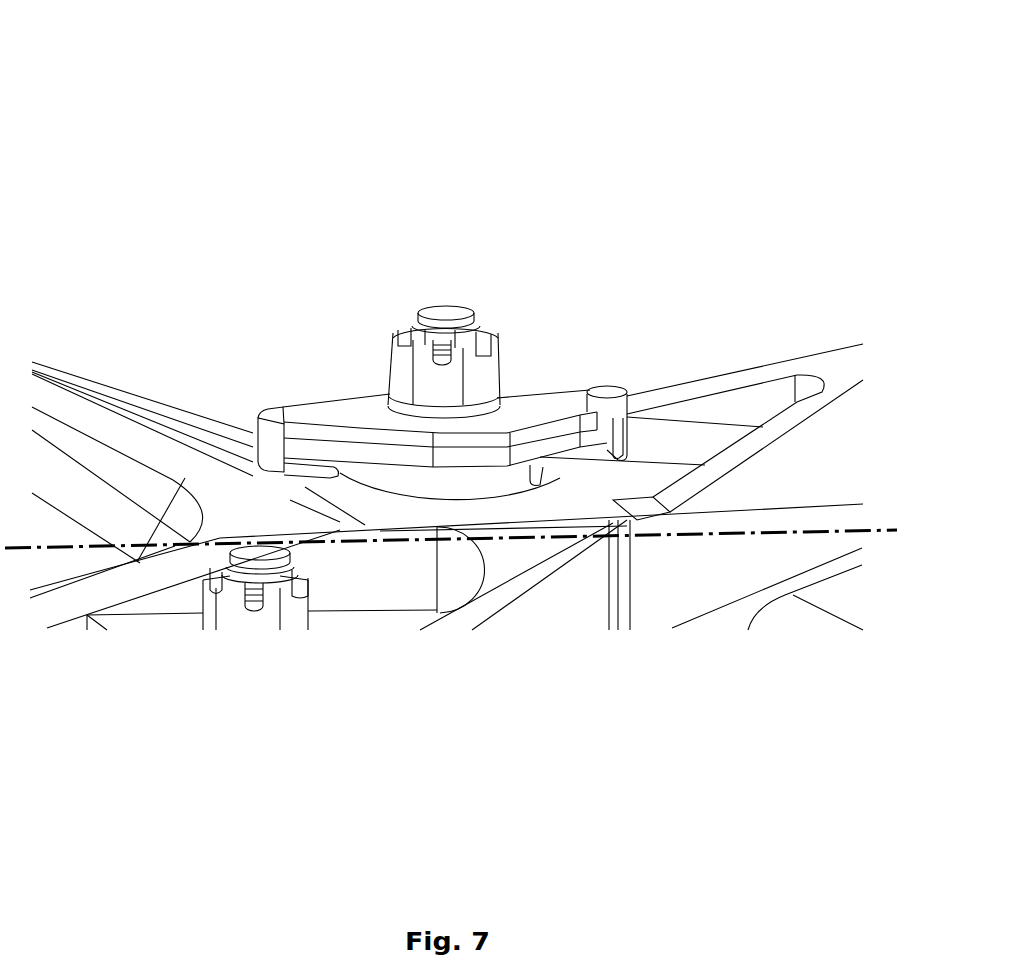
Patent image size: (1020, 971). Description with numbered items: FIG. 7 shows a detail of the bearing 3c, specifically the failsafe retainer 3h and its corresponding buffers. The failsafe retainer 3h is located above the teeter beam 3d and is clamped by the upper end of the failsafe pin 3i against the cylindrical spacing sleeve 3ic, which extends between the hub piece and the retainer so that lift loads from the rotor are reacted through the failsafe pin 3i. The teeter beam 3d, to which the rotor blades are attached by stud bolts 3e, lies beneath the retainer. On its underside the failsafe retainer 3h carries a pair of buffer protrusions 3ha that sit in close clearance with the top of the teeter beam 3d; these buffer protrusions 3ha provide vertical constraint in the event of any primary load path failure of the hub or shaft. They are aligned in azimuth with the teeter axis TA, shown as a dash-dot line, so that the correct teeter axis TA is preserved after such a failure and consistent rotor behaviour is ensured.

The bearing 3c is at (571, 200).
The teeter beam 3d is at (673, 446).
The stud bolt 3e is at (257, 623).
The failsafe retainer 3h is at (347, 413).
The buffer protrusion 3ha is at (298, 472).
The failsafe pin 3i is at (454, 302).
The spacing sleeve 3ic is at (432, 483).
The teeter axis TA is at (856, 531).